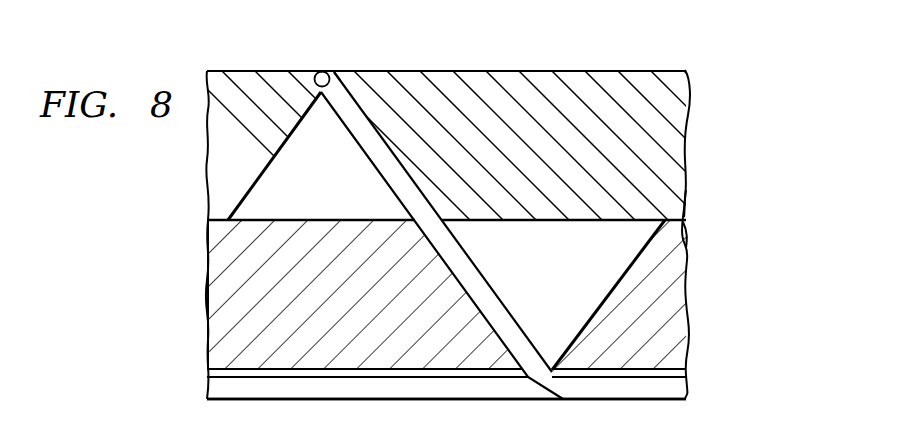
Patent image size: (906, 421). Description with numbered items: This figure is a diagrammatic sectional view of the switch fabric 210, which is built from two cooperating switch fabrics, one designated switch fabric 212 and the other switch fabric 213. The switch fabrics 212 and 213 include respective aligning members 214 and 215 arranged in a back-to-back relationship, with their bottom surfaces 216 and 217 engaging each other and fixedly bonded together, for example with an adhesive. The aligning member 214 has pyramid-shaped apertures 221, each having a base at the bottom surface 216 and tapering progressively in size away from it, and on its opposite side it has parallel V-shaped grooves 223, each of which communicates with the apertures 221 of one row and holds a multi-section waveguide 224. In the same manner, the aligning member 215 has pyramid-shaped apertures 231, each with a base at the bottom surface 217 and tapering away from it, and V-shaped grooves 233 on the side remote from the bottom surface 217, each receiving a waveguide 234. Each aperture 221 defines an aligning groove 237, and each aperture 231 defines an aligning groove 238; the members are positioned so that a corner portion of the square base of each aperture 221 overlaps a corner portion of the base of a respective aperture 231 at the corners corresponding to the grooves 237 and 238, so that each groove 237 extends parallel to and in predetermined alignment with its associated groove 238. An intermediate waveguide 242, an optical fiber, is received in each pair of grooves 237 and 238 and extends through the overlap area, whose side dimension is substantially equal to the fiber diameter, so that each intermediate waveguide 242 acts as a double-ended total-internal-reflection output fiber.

The switch fabric 210 is at (186, 50).
The switch fabric 212 is at (510, 122).
The switch fabric 213 is at (476, 292).
The aligning member 214 is at (537, 71).
The aligning member 215 is at (210, 345).
The bottom surface 216 is at (688, 248).
The bottom surface 217 is at (686, 217).
The pyramid-shaped aperture 221 is at (289, 158).
The V-shaped groove 223 is at (333, 69).
The waveguide 224 is at (320, 70).
The pyramid-shaped aperture 231 is at (596, 278).
The V-shaped groove 233 is at (666, 370).
The waveguide 234 is at (209, 388).
The aligning groove 237 is at (403, 168).
The aligning groove 238 is at (493, 265).
The intermediate waveguide 242 is at (442, 235).